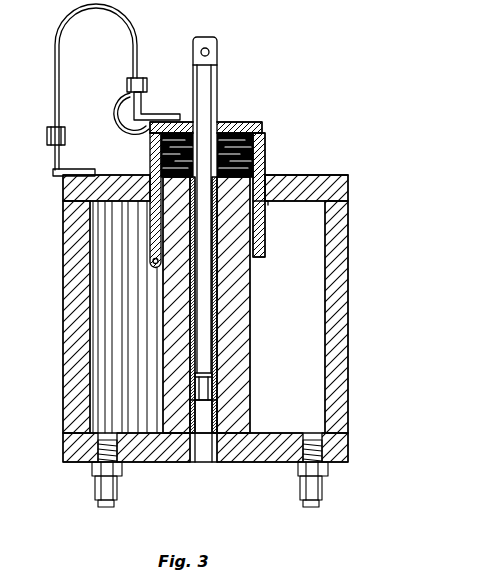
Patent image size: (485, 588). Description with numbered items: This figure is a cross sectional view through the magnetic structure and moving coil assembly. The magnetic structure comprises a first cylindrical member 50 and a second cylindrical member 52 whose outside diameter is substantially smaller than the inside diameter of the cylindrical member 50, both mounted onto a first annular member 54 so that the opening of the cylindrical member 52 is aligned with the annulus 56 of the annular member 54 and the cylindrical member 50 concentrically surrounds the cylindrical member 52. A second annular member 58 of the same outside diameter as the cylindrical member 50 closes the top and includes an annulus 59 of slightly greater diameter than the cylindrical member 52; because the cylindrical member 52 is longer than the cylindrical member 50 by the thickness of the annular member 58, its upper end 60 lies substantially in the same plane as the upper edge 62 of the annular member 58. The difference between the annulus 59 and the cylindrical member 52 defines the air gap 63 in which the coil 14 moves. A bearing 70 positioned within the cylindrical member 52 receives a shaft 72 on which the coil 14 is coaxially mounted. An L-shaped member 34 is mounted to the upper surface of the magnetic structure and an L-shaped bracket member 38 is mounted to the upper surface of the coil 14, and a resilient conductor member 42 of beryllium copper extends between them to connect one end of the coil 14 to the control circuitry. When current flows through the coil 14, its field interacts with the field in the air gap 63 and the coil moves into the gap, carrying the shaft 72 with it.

The coil 14 is at (206, 191).
The L-shaped member 34 is at (60, 160).
The L-shaped bracket member 38 is at (145, 110).
The resilient conductor member 42 is at (138, 40).
The first cylindrical member 50 is at (350, 301).
The second cylindrical member 52 is at (252, 301).
The first annular member 54 is at (352, 448).
The annulus 56 is at (206, 463).
The second annular member 58 is at (219, 180).
The annulus 59 is at (270, 166).
The upper end 60 is at (150, 160).
The upper edge 62 is at (335, 176).
The air gap 63 is at (264, 202).
The bearing 70 is at (214, 386).
The shaft 72 is at (219, 108).